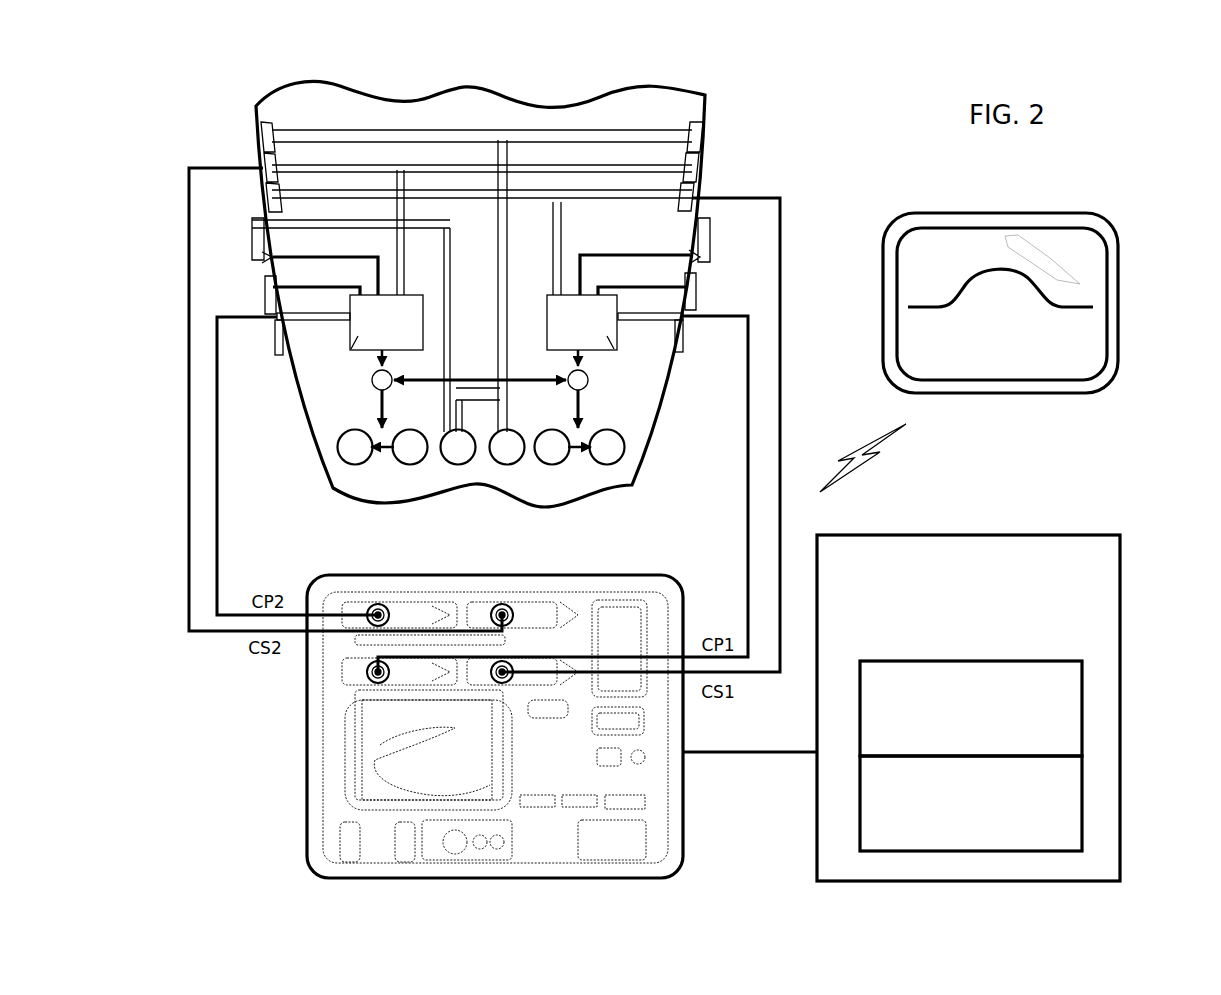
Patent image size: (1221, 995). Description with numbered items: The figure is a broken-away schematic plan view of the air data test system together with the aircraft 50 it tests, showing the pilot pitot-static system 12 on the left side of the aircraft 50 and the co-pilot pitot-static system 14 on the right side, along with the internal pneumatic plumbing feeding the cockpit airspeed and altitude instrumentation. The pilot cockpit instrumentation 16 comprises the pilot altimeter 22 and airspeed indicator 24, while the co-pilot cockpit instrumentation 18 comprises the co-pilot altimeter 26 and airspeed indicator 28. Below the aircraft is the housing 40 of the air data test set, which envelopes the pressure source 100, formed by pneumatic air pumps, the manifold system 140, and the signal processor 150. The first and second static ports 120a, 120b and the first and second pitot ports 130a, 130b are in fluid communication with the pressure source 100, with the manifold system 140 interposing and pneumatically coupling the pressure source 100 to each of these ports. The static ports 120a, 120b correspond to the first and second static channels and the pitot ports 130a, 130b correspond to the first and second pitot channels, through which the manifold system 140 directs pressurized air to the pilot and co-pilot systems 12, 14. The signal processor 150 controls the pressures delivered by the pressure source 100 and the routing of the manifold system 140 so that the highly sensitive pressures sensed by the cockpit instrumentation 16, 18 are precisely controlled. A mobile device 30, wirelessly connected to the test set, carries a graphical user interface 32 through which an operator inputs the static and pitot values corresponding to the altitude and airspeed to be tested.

The aircraft 50 is at (523, 215).
The co-pilot pitot-static system 14 is at (290, 137).
The pilot pitot-static system 12 is at (657, 198).
The co-pilot cockpit instrumentation 18 is at (325, 481).
The co-pilot altimeter 26 is at (348, 462).
The co-pilot airspeed indicator 28 is at (403, 463).
The pilot cockpit instrumentation 16 is at (633, 489).
The pilot altimeter 22 is at (596, 462).
The pilot airspeed indicator 24 is at (557, 463).
The housing 40 is at (307, 720).
The second impact (pitot) port 130b is at (388, 610).
The first impact (pitot) port 130a is at (388, 671).
The first static port 120a is at (495, 670).
The second static port 120b is at (512, 614).
The mobile device 30 is at (988, 265).
The graphical user interface 32 is at (1067, 270).
The signal processor 150 is at (1013, 658).
The pressure source 100 is at (1054, 661).
The manifold system 140 is at (1060, 756).